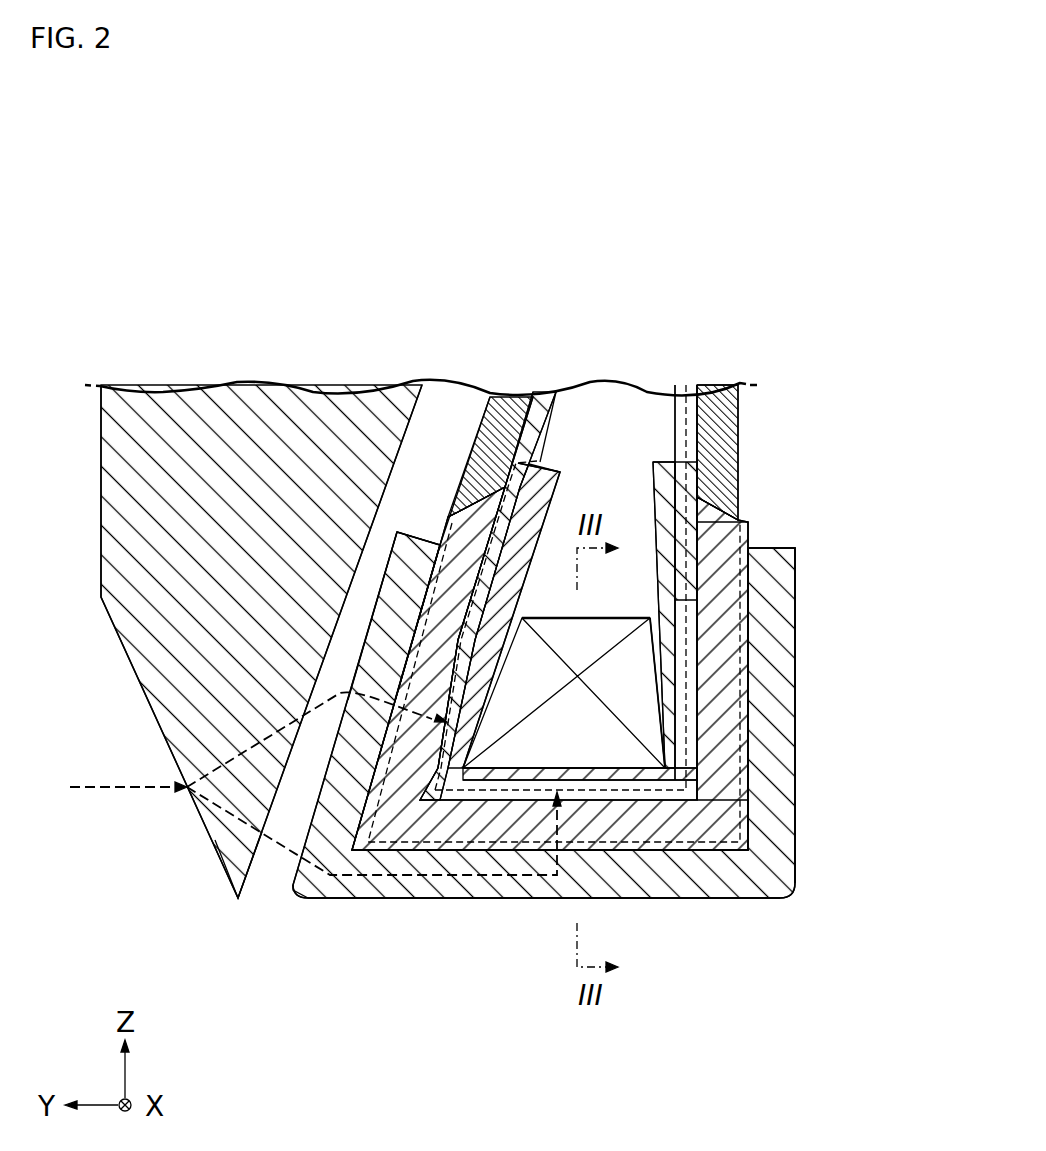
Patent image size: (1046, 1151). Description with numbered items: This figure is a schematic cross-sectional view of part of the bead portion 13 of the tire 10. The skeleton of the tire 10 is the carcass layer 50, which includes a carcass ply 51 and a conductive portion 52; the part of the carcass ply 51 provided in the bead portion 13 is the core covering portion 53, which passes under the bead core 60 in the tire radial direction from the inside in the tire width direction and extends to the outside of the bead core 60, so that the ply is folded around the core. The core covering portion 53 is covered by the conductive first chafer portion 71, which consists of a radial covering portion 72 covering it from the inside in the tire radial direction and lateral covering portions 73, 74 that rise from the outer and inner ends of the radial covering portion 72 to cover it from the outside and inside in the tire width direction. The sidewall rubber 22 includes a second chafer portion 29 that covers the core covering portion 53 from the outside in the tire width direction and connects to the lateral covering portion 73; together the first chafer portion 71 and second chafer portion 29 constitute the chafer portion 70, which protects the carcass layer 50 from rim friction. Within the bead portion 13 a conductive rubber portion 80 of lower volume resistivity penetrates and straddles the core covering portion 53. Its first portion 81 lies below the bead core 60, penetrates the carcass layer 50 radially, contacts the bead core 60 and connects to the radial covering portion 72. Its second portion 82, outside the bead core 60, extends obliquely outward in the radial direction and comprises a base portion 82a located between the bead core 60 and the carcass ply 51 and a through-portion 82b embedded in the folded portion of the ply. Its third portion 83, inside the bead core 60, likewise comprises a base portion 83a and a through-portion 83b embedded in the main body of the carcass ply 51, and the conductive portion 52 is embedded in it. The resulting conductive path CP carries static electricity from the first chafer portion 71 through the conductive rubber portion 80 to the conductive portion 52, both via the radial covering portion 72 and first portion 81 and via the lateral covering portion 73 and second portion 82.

The tire 10 is at (692, 178).
The bead portion 13 is at (735, 280).
The sidewall rubber 22 is at (152, 380).
The second chafer portion 29 is at (242, 857).
The carcass layer 50 is at (644, 518).
The carcass ply 51 is at (722, 397).
The conductive portion 52 is at (580, 398).
The core covering portion 53 is at (737, 382).
The bead core 60 is at (640, 712).
The chafer portion 70 is at (380, 1012).
The first chafer portion 71 is at (372, 905).
The radial covering portion 72 is at (487, 900).
The lateral covering portion 73 is at (413, 548).
The lateral covering portion 74 is at (783, 695).
The conductive rubber portion 80 is at (558, 460).
The first portion 81 is at (634, 830).
The second portion 82 is at (372, 617).
The base portion 82a is at (565, 478).
The through-portion 82b is at (435, 667).
The third portion 83 is at (791, 592).
The base portion 83a is at (668, 485).
The through-portion 83b is at (727, 663).
The conductive path CP is at (102, 790).